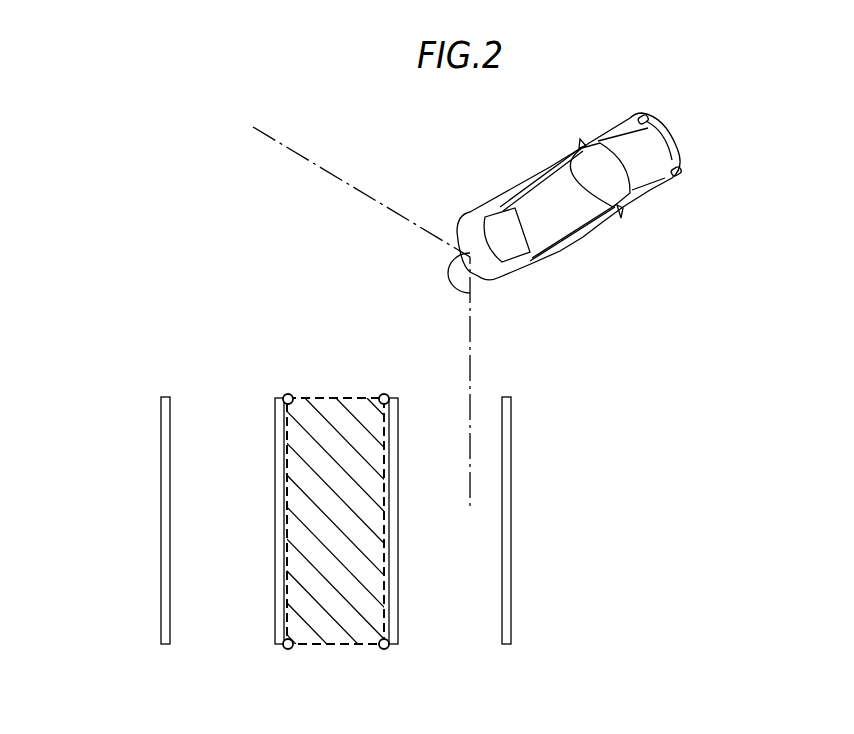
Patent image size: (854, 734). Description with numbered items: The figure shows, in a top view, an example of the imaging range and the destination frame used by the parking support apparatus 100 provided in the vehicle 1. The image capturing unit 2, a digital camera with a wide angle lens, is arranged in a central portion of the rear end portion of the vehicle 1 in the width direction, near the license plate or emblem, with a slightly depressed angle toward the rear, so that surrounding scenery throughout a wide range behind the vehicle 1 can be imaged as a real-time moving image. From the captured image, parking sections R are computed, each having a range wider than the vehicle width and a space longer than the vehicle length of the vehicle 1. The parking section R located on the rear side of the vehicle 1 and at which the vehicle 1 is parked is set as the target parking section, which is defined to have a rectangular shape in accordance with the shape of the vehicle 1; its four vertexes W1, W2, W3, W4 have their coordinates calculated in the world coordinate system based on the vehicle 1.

The vehicle 1 is at (573, 196).
The parking support apparatus 100 is at (621, 218).
The image capturing unit 2 is at (470, 293).
The parking section R is at (195, 551).
The vertex W1 is at (289, 393).
The vertex W2 is at (286, 650).
The vertex W3 is at (384, 650).
The vertex W4 is at (386, 393).